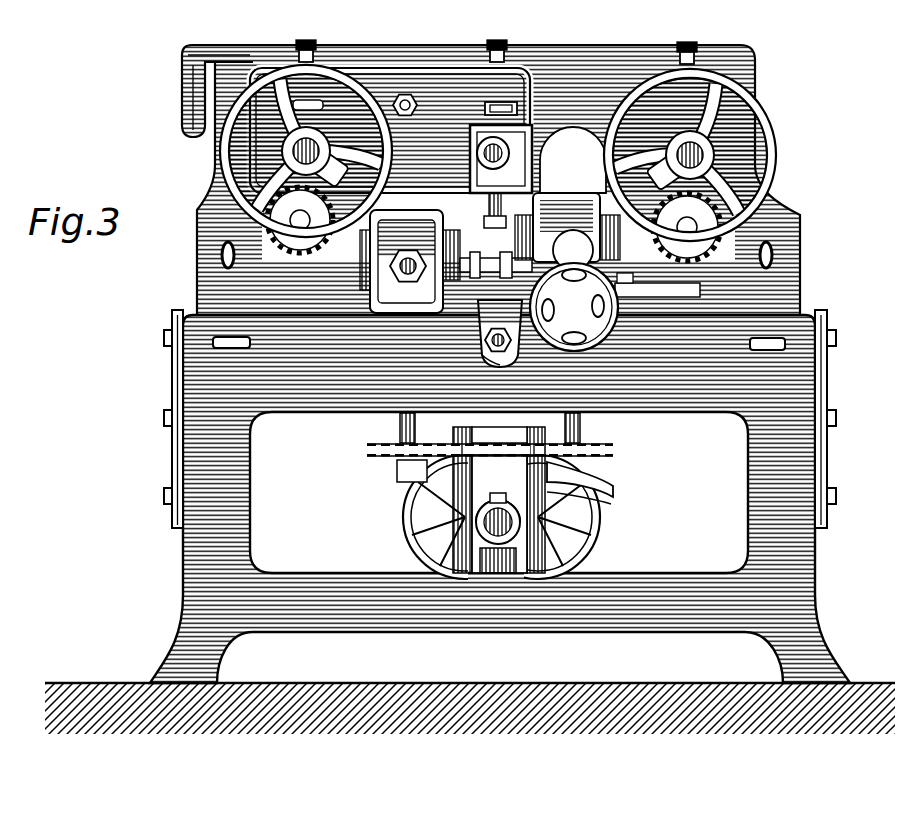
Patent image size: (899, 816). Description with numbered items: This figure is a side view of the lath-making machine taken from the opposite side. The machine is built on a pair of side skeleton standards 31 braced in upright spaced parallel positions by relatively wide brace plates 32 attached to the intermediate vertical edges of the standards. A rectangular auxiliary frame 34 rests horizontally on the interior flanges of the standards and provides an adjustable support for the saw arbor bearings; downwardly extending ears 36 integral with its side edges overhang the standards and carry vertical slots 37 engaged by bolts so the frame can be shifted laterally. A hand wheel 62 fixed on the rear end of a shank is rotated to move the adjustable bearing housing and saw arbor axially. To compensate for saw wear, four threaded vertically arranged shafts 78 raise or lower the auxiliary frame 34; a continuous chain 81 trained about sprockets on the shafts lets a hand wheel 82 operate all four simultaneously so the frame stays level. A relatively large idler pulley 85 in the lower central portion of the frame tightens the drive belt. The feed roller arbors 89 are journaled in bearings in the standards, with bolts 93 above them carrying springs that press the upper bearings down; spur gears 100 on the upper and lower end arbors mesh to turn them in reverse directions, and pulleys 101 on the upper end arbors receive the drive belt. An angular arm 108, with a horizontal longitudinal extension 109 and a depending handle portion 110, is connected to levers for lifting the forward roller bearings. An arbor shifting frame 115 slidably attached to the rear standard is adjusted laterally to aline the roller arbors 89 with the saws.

The side skeleton standards 31 is at (752, 386).
The brace plates 32 is at (173, 447).
The auxiliary frame 34 is at (650, 287).
The ears 36 is at (481, 333).
The vertical slots 37 is at (500, 367).
The hand wheel 62 is at (548, 342).
The vertically arranged shafts 78 is at (583, 437).
The continuous chain 81 is at (453, 448).
The hand wheel 82 is at (613, 491).
The idler pulley 85 is at (595, 533).
The roller arbors 89 is at (482, 153).
The bolts 93 is at (688, 50).
The spur gears 100 is at (282, 150).
The pulleys 101 is at (223, 173).
The angular arm 108 is at (198, 62).
The longitudinal extension 109 is at (465, 53).
The handle portion 110 is at (195, 100).
The arbor shifting frame 115 is at (443, 90).